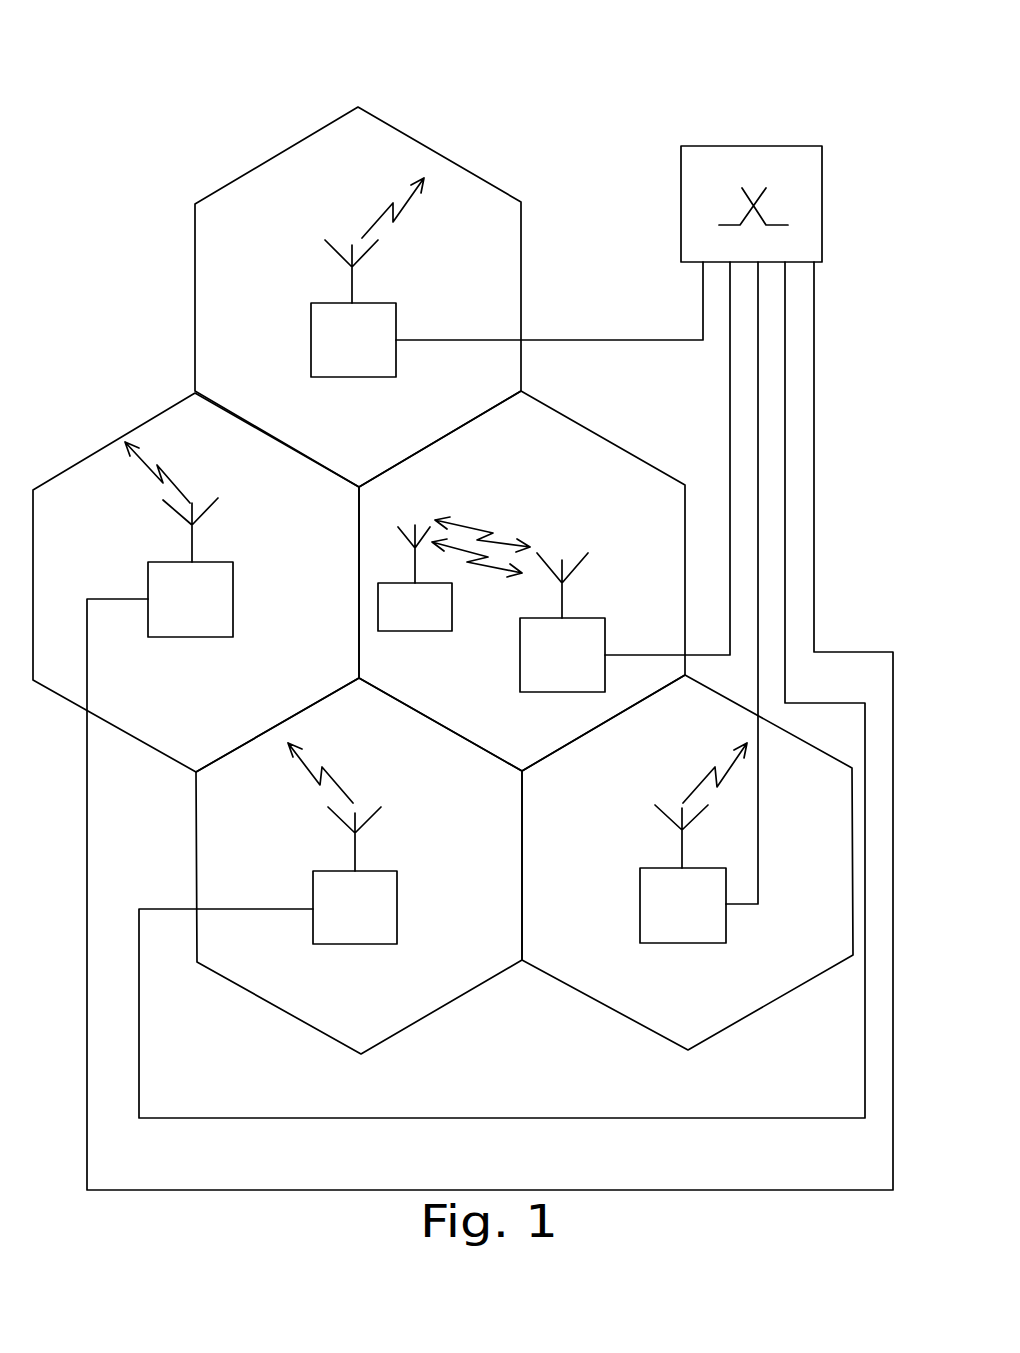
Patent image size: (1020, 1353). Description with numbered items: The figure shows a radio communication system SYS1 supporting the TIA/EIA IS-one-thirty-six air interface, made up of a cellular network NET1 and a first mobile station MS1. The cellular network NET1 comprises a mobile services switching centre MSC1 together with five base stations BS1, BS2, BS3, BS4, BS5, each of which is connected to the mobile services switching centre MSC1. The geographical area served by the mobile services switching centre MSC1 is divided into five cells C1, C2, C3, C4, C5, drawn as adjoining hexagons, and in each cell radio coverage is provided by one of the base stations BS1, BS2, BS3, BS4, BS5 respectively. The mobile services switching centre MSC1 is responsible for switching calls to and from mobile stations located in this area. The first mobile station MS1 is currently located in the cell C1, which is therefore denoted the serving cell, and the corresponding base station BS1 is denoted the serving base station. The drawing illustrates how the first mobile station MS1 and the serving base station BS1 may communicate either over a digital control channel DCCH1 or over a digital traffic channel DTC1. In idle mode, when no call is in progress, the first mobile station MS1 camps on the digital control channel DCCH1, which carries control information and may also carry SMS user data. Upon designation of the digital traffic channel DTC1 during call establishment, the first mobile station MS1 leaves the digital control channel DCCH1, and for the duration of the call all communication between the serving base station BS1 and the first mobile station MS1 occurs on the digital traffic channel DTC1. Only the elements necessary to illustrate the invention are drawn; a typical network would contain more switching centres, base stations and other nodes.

The radio communication system SYS1 is at (141, 54).
The cellular network NET1 is at (383, 79).
The mobile services switching centre MSC1 is at (732, 146).
The cell C1 is at (670, 477).
The cell C2 is at (758, 1007).
The cell C3 is at (263, 1003).
The cell C4 is at (135, 432).
The cell C5 is at (474, 172).
The serving base station BS1 is at (553, 693).
The base station BS2 is at (678, 943).
The base station BS3 is at (345, 944).
The base station BS4 is at (185, 637).
The base station BS5 is at (352, 378).
The first mobile station MS1 is at (415, 632).
The digital control channel DCCH1 is at (477, 531).
The digital traffic channel DTC1 is at (485, 565).